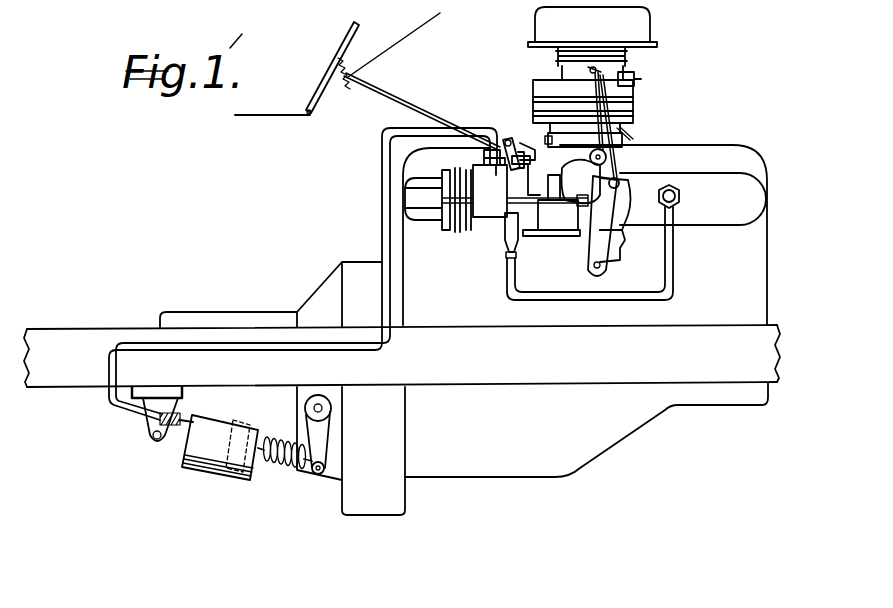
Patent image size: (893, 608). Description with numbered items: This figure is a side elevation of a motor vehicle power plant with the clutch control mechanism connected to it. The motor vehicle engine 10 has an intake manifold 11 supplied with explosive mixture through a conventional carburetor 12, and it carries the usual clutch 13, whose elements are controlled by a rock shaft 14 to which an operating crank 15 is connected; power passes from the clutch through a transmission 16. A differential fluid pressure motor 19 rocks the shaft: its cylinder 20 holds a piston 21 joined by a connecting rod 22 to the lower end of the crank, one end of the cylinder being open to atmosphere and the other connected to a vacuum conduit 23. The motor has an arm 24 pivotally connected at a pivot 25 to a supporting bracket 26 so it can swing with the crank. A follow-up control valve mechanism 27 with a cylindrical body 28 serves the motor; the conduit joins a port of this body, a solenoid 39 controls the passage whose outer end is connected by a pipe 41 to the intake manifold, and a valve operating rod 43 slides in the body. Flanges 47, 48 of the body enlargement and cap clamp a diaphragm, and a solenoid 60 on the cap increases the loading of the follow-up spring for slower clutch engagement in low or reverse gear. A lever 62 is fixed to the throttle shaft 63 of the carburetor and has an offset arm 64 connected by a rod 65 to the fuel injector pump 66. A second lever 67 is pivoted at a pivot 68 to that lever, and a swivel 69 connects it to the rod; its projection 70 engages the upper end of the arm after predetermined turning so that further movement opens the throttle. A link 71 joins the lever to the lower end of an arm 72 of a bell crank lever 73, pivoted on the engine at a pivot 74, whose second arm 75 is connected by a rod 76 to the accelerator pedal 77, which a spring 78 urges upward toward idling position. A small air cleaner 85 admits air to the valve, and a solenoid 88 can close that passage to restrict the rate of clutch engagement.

The motor vehicle engine 10 is at (742, 146).
The intake manifold 11 is at (740, 180).
The carburetor 12 is at (626, 62).
The clutch 13 is at (346, 262).
The rock shaft 14 is at (332, 408).
The operating crank 15 is at (323, 434).
The transmission 16 is at (246, 312).
The differential fluid pressure motor 19 is at (215, 484).
The cylinder 20 is at (225, 413).
The piston 21 is at (233, 473).
The connecting rod 22 is at (260, 440).
The vacuum conduit 23 is at (392, 346).
The arm 24 is at (178, 446).
The pivot 25 is at (155, 441).
The supporting bracket 26 is at (148, 438).
The follow-up control valve mechanism 27 is at (478, 236).
The cylindrical body 28 is at (487, 237).
The solenoid 39 is at (512, 257).
The pipe 41 is at (598, 302).
The valve operating rod 43 is at (548, 182).
The flange 47 is at (467, 235).
The flange 48 is at (458, 233).
The solenoid 60 is at (424, 198).
The lever 62 is at (610, 245).
The shaft 63 is at (620, 186).
The offset arm 64 is at (614, 208).
The rod 65 is at (602, 165).
The fuel injector pump 66 is at (636, 83).
The second lever 67 is at (583, 250).
The pivot 68 is at (590, 270).
The swivel 69 is at (583, 210).
The projection 70 is at (600, 178).
The link 71 is at (556, 237).
The arm 72 is at (463, 233).
The bell crank lever 73 is at (529, 144).
The pivot 74 is at (507, 139).
The second arm 75 is at (500, 138).
The rod 76 is at (418, 110).
The accelerator pedal 77 is at (336, 62).
The spring 78 is at (350, 73).
The air cleaner 85 is at (527, 190).
The solenoid 88 is at (552, 138).